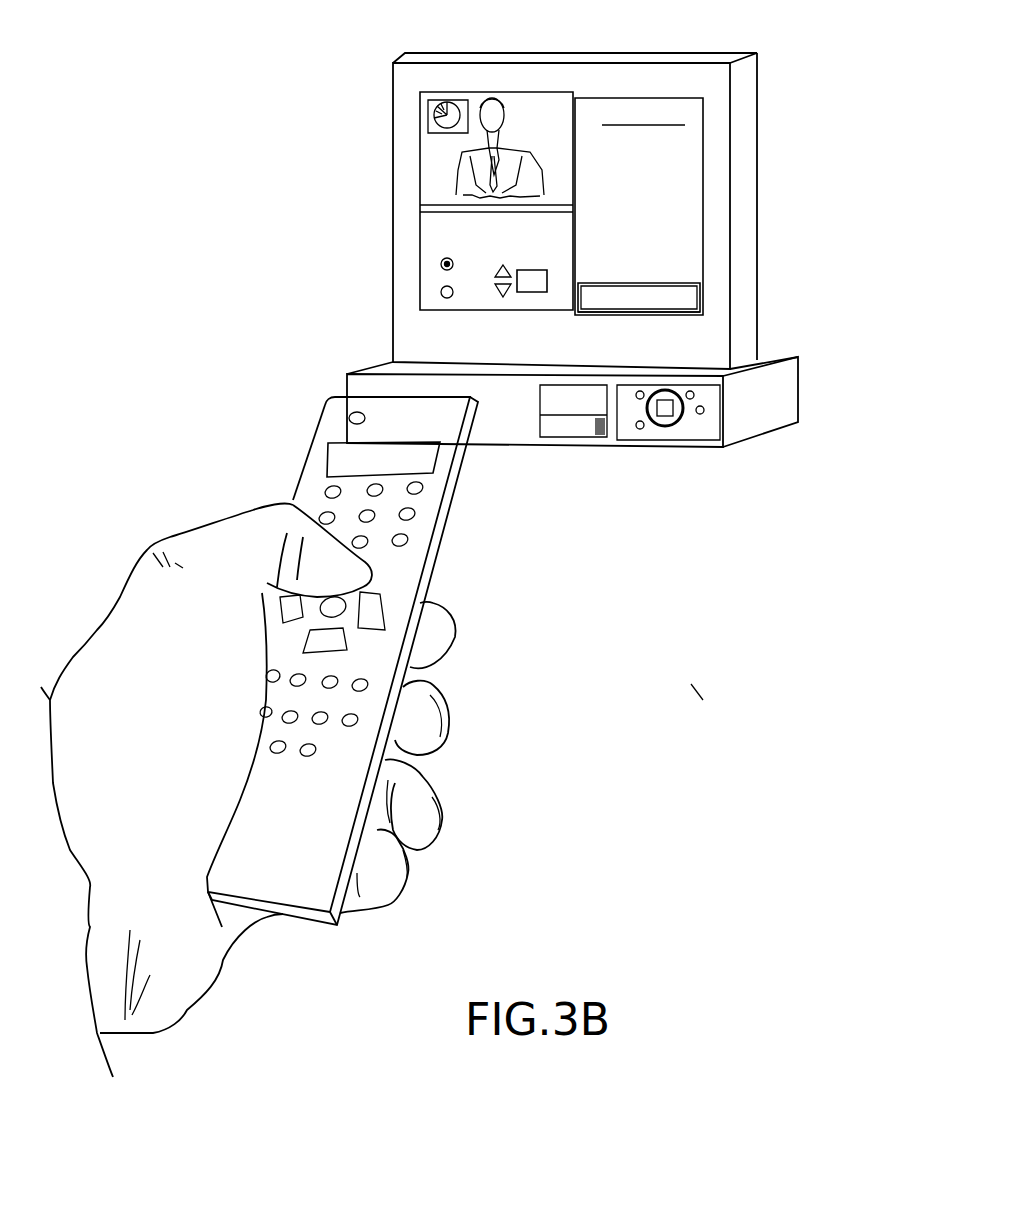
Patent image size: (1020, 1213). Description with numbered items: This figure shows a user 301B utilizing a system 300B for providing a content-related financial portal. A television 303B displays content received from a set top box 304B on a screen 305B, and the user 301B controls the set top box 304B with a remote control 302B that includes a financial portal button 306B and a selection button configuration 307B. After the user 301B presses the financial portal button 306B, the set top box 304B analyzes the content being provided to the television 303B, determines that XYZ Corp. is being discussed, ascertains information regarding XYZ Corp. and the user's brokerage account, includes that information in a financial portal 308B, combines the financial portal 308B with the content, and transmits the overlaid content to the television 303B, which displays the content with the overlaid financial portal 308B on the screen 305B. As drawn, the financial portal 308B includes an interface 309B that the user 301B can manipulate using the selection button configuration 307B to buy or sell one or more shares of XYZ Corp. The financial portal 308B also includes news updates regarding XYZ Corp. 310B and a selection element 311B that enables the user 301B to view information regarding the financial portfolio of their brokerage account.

The system 300B is at (691, 684).
The user 301B is at (210, 527).
The remote control 302B is at (433, 573).
The television 303B is at (470, 63).
The set top box 304B is at (798, 397).
The screen 305B is at (563, 97).
The financial portal button 306B is at (433, 460).
The selection button configuration 307B is at (377, 607).
The financial portal 308B is at (682, 316).
The interface 309B is at (537, 310).
The news updates regarding XYZ Corp. 310B is at (693, 177).
The selection element 311B is at (699, 290).